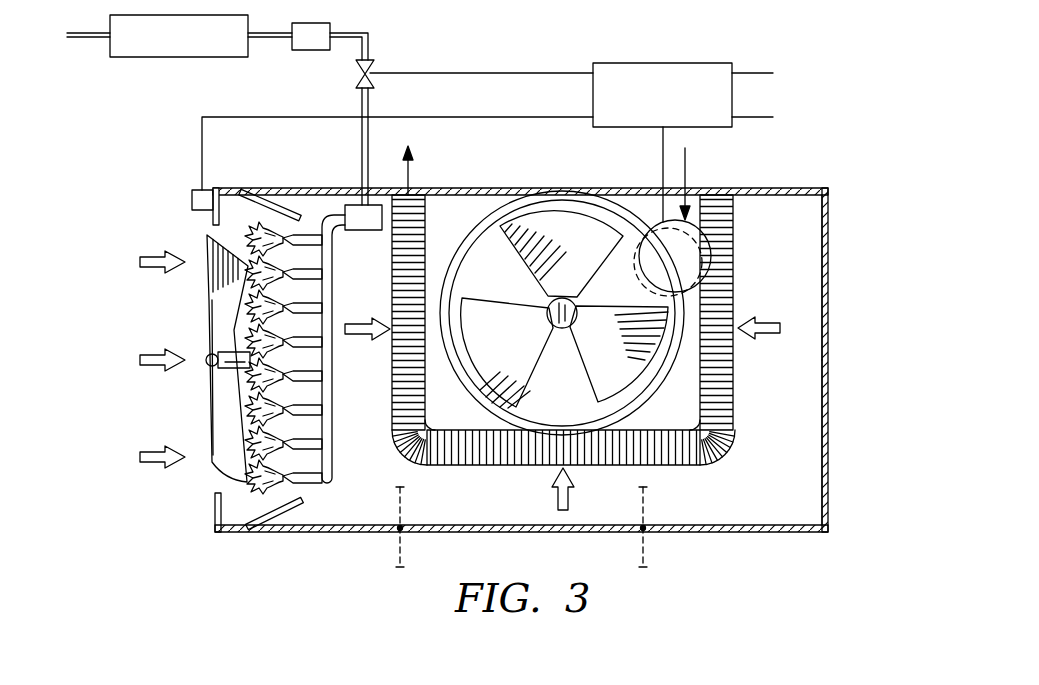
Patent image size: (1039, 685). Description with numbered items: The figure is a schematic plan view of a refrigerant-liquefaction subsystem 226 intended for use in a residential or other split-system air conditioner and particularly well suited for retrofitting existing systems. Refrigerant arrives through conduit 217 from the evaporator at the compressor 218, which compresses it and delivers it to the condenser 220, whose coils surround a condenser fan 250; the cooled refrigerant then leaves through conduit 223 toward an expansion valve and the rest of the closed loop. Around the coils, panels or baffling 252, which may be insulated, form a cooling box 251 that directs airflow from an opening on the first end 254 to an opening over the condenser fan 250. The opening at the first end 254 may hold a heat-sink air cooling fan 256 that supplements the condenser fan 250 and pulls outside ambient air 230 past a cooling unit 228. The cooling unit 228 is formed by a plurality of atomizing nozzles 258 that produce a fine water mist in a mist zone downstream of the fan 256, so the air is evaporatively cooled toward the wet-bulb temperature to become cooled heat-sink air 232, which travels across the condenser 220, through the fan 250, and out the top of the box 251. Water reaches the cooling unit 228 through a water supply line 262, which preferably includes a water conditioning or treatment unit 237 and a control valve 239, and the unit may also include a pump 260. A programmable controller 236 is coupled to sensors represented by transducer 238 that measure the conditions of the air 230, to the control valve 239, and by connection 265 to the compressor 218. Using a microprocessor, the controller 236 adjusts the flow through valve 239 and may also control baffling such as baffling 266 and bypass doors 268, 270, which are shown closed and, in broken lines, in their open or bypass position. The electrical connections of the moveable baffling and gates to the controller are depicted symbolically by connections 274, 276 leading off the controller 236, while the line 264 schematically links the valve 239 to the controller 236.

The conduit 217 is at (686, 160).
The compressor 218 is at (710, 222).
The condenser 220 is at (733, 267).
The conduit 223 is at (412, 172).
The refrigerant-liquefaction subsystem 226 is at (805, 181).
The cooling unit 228 is at (332, 440).
The ambient air 230 is at (138, 263).
The cooled heat-sink air 232 is at (362, 342).
The programmable controller 236 is at (662, 63).
The water conditioning or treatment unit 237 is at (178, 58).
The transducer 238 is at (192, 200).
The control valve 239 is at (357, 72).
The condenser fan 250 is at (594, 380).
The cooling box 251 is at (828, 246).
The panels or baffling 252 is at (828, 470).
The first end 254 is at (214, 512).
The heat-sink air cooling fan 256 is at (212, 470).
The atomizing nozzles 258 is at (328, 280).
The pump 260 is at (346, 204).
The water supply line 262 is at (92, 40).
The valve control line 264 is at (482, 73).
The connection 265 is at (662, 172).
The baffling 266 is at (272, 191).
The bypass door 268 is at (402, 536).
The bypass door 270 is at (645, 536).
The connection 274 is at (748, 73).
The connection 276 is at (762, 113).